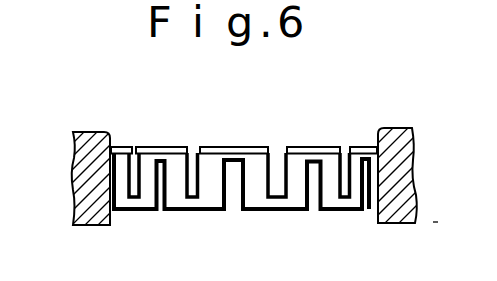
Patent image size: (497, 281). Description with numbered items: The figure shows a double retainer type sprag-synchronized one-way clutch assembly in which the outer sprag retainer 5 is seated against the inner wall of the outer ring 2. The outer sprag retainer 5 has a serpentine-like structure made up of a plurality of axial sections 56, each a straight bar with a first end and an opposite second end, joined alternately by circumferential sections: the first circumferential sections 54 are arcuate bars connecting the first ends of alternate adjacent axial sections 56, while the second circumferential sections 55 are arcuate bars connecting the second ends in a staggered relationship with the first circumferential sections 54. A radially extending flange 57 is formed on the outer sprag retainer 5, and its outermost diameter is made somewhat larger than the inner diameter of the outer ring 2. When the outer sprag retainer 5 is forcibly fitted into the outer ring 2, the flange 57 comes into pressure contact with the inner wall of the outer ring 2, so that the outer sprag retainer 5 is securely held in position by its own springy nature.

The outer ring 2 is at (87, 143).
The outer sprag retainer 5 is at (244, 151).
The first circumferential section 54 is at (196, 208).
The second circumferential section 55 is at (212, 166).
The axial section 56 is at (217, 182).
The flange 57 is at (259, 152).